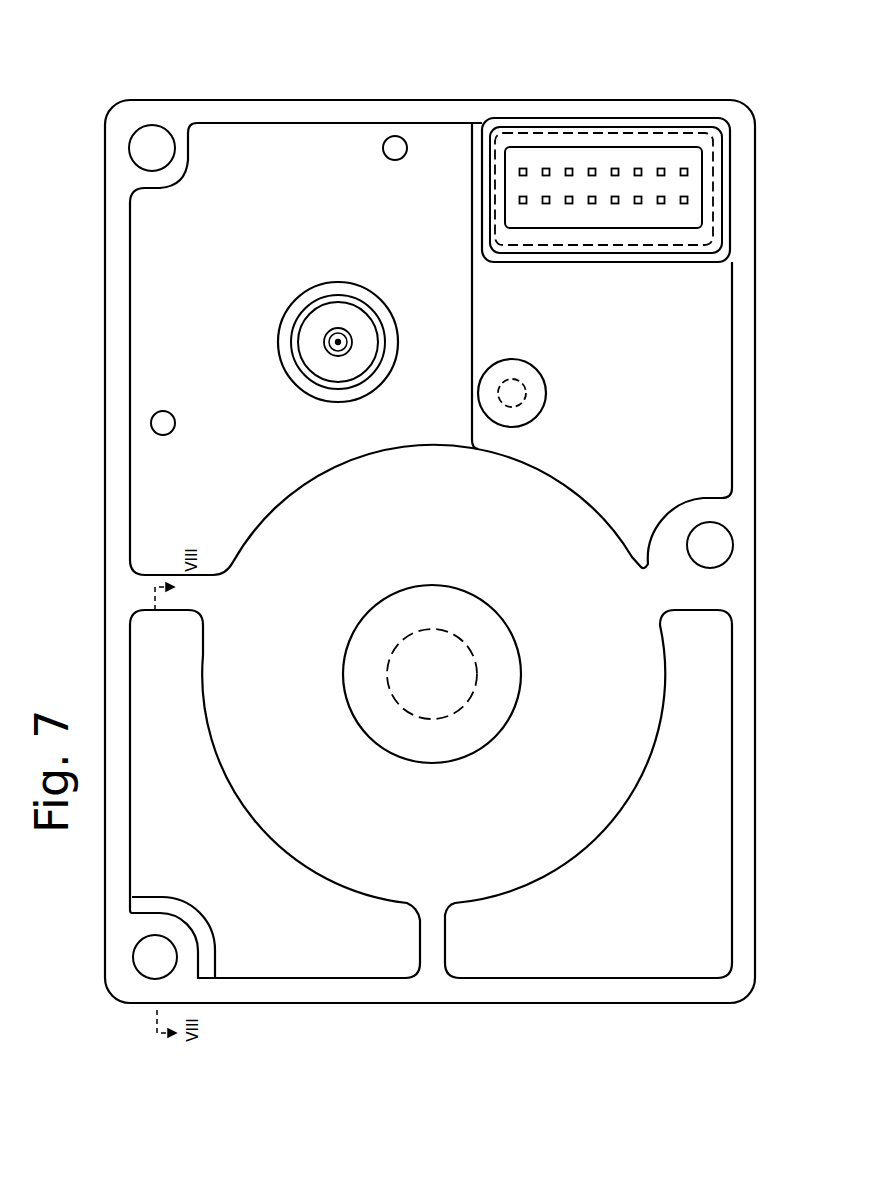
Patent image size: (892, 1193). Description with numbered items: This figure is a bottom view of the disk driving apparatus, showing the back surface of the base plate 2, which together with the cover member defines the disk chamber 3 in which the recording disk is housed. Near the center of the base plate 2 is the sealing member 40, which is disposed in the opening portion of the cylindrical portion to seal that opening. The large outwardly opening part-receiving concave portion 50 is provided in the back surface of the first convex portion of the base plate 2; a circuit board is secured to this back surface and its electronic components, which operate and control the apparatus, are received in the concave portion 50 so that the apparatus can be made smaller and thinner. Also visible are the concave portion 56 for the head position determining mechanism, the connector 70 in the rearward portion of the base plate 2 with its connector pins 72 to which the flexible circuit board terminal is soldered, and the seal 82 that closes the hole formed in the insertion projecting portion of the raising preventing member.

The base plate 2 is at (105, 320).
The disk chamber 3 is at (627, 738).
The sealing member 40 is at (419, 611).
The part-receiving concave portion 50 is at (293, 893).
The concave portion for a head position determining mechanism 56 is at (303, 315).
The connector 70 is at (647, 222).
The connector pin 72 is at (523, 195).
The seal 82 is at (538, 385).